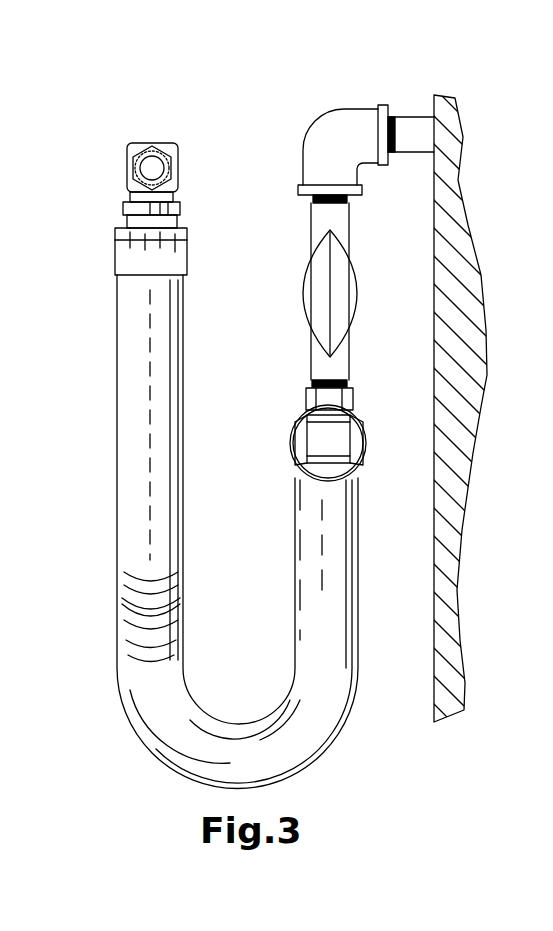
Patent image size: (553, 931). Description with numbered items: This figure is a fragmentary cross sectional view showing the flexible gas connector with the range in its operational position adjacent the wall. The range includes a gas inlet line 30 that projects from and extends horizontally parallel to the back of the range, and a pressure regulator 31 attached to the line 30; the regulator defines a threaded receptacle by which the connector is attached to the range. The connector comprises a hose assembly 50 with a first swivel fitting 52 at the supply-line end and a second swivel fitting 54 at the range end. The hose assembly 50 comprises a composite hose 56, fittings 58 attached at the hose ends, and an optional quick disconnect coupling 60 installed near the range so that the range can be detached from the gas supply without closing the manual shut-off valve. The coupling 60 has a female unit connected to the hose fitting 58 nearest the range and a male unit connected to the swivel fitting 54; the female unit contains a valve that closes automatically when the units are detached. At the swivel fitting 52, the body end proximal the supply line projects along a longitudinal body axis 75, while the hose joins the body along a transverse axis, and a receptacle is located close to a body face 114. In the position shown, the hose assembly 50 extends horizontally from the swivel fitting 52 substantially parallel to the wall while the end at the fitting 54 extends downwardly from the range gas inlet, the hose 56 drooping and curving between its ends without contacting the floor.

The gas inlet line 30 is at (410, 120).
The pressure regulator 31 is at (318, 280).
The hose assembly 50 is at (326, 756).
The first swivel fitting 52 is at (180, 150).
The second swivel fitting 54 is at (327, 435).
The composite hose 56 is at (142, 665).
The hose fitting 58 is at (120, 236).
The quick disconnect coupling 60 is at (282, 456).
The longitudinal body axis 75 is at (318, 576).
The body face 114 is at (340, 422).